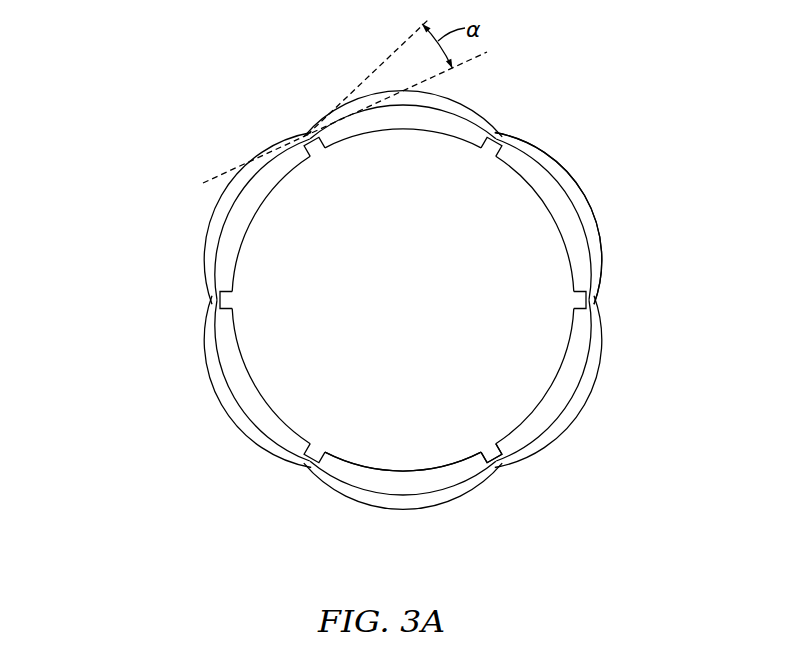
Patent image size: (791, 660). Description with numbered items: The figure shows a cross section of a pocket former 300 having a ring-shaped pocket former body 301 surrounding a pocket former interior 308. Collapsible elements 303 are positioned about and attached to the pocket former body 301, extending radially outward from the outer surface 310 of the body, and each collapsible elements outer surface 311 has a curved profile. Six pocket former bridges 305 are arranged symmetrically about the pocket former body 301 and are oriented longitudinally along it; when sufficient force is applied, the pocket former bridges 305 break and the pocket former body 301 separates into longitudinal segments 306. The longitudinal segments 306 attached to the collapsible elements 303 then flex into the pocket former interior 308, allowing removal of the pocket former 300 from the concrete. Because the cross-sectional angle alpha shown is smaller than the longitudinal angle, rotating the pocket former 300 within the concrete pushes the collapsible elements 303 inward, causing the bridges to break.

The pocket former 300 is at (155, 90).
The pocket former body 301 is at (240, 233).
The collapsible elements 303 is at (573, 173).
The pocket former bridges 305 is at (307, 136).
The longitudinal segments 306 is at (458, 100).
The pocket former interior 308 is at (412, 433).
The outer surface 310 is at (487, 473).
The collapsible elements outer surface 311 is at (585, 198).